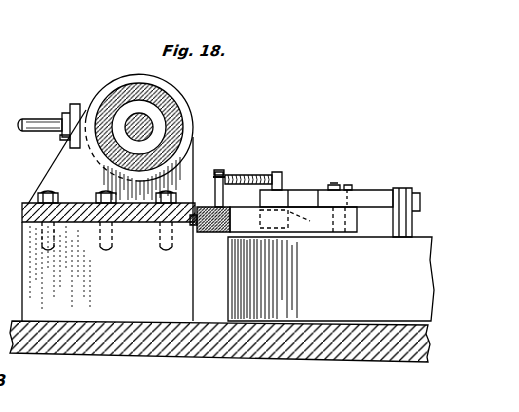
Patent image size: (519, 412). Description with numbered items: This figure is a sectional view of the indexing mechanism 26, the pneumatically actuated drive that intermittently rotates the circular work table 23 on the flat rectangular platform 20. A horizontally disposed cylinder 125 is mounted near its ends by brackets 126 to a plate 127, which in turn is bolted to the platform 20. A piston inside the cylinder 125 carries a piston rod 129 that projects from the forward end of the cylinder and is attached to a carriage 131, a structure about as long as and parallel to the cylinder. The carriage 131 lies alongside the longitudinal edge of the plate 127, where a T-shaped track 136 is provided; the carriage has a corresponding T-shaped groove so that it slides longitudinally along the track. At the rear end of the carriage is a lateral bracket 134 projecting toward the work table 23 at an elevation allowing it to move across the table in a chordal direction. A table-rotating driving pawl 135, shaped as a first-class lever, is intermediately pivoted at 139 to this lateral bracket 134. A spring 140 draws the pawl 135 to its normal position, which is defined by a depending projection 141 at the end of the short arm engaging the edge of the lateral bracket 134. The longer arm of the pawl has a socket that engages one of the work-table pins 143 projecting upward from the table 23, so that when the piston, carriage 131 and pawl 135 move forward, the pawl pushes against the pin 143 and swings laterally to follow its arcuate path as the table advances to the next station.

The platform 20 is at (86, 359).
The work table 23 is at (228, 292).
The indexing mechanism 26 is at (196, 136).
The cylinder 125 is at (117, 86).
The piston rod 129 is at (146, 120).
The brackets 126 is at (62, 159).
The plate 127 is at (30, 203).
The carriage 131 is at (205, 206).
The lateral bracket 134 is at (355, 233).
The driving pawl 135 is at (368, 190).
The T-shaped track 136 is at (212, 233).
The pivot 139 is at (336, 188).
The spring 140 is at (251, 172).
The depending projection 141 is at (302, 221).
The work-table pins 143 is at (400, 189).